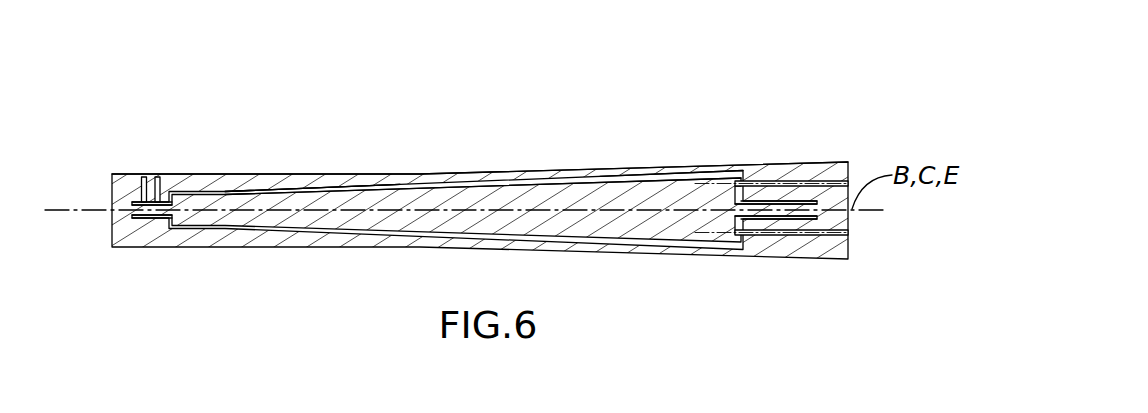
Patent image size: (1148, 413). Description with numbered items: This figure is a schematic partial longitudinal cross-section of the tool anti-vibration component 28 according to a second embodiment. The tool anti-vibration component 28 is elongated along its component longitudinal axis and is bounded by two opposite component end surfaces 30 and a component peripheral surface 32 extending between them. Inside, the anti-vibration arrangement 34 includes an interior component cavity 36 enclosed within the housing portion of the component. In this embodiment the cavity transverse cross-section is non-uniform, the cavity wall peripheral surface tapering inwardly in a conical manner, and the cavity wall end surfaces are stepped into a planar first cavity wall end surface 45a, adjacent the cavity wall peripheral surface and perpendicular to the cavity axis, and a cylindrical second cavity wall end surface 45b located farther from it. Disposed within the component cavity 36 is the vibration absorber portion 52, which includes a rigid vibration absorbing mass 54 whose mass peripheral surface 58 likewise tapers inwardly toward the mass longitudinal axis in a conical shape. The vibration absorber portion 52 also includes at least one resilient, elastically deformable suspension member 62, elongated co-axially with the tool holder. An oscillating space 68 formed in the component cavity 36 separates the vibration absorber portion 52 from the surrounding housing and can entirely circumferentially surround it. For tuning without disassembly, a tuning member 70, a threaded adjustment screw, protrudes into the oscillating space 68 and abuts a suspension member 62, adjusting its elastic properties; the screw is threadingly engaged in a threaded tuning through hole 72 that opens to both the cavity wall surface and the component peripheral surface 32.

The tool anti-vibration component 28 is at (798, 93).
The component end surfaces 30 is at (112, 199).
The component peripheral surface 32 is at (531, 172).
The anti-vibration arrangement 34 is at (467, 161).
The interior component cavity 36 is at (655, 182).
The first cavity wall end surface 45a is at (743, 176).
The second cavity wall end surface 45b is at (778, 203).
The vibration absorber portion 52 is at (592, 208).
The vibration absorbing mass 54 is at (417, 200).
The mass peripheral surface 58 is at (302, 193).
The resilient suspension member 62 is at (153, 216).
The oscillating space 68 is at (326, 190).
The tuning member 70 is at (157, 180).
The threaded tuning through hole 72 is at (143, 188).